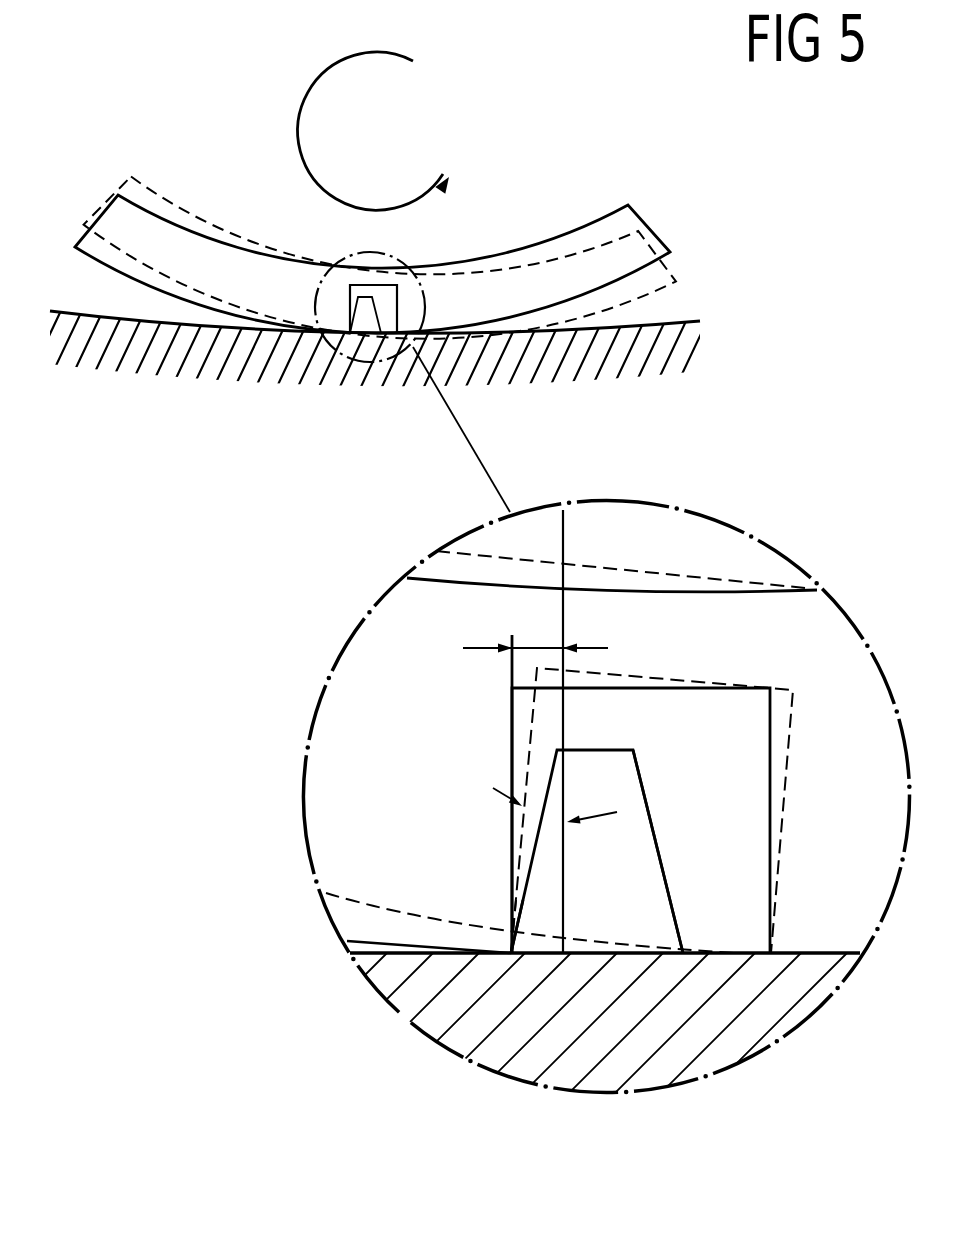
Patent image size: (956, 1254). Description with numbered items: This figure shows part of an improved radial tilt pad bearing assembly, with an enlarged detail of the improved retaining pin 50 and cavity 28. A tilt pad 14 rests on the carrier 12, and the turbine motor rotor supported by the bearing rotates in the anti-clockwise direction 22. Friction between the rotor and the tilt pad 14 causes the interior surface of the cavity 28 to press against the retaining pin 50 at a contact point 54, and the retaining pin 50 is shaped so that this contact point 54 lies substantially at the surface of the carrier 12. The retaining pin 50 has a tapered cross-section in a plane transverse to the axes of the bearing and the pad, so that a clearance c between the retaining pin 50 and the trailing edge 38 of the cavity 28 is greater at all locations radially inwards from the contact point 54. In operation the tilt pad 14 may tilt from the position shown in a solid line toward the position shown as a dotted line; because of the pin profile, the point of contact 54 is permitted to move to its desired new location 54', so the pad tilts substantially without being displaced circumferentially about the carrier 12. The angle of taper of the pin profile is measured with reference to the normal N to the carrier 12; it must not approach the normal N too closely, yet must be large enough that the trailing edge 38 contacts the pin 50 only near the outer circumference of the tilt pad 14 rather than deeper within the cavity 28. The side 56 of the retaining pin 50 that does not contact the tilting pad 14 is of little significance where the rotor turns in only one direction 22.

The anti-clockwise direction 22 is at (362, 55).
The tilt pad 14 is at (537, 285).
The carrier 12 is at (678, 344).
The retaining pin 50 is at (363, 340).
The cavity 28 is at (724, 705).
The trailing edge 38 is at (510, 752).
The side of the retaining pin 56 is at (682, 863).
The contact point 54 is at (480, 914).
The new location of contact point 54' is at (568, 922).
The normal N is at (566, 558).
The clearance c is at (535, 630).